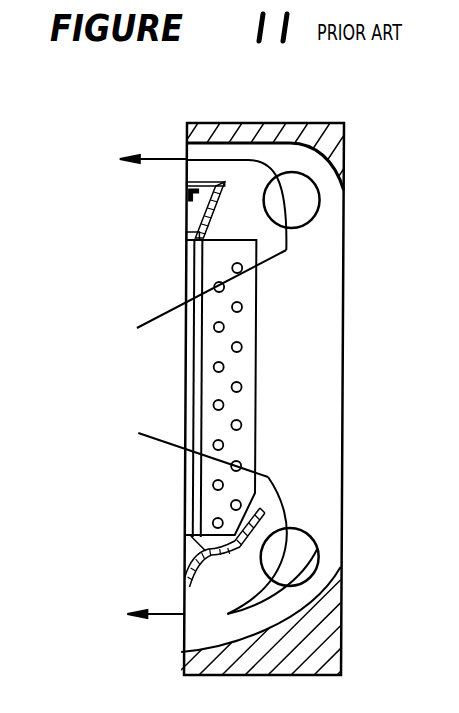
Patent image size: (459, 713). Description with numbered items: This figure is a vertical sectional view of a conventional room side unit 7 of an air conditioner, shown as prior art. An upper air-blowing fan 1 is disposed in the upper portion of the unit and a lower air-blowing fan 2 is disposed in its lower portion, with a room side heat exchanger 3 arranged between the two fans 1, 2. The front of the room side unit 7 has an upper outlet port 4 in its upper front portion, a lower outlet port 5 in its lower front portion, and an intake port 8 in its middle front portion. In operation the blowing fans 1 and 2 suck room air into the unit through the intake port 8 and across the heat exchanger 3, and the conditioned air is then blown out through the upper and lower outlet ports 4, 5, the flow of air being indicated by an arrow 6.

The upper air-blowing fan 1 is at (320, 200).
The lower air-blowing fan 2 is at (320, 548).
The room side heat exchanger 3 is at (213, 350).
The upper outlet port 4 is at (190, 150).
The lower outlet port 5 is at (183, 633).
The arrow 6 is at (287, 250).
The room side unit 7 is at (282, 100).
The intake port 8 is at (187, 425).